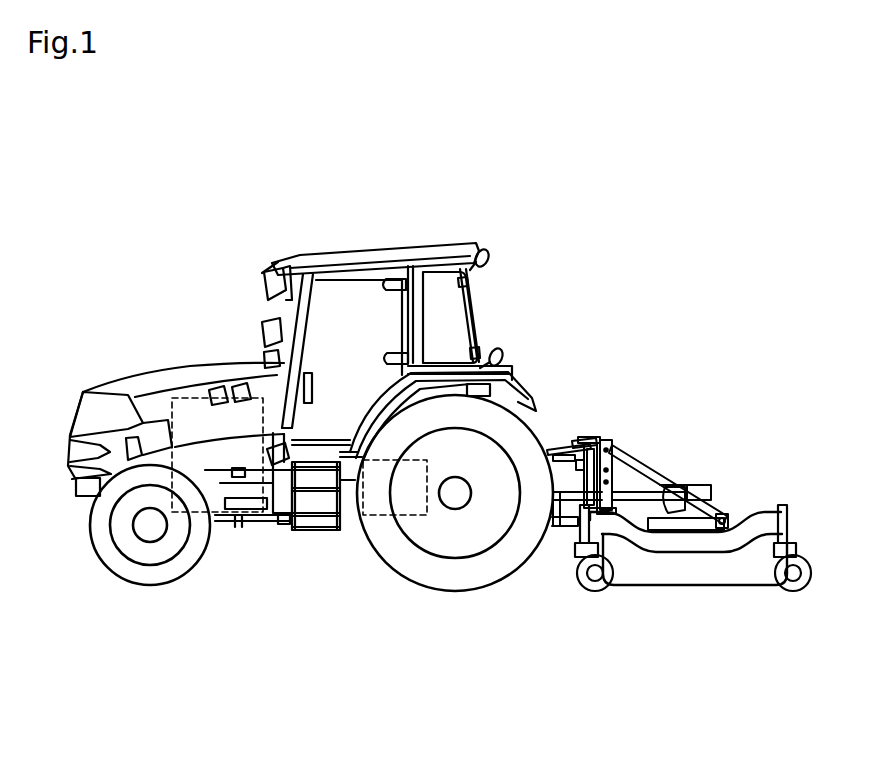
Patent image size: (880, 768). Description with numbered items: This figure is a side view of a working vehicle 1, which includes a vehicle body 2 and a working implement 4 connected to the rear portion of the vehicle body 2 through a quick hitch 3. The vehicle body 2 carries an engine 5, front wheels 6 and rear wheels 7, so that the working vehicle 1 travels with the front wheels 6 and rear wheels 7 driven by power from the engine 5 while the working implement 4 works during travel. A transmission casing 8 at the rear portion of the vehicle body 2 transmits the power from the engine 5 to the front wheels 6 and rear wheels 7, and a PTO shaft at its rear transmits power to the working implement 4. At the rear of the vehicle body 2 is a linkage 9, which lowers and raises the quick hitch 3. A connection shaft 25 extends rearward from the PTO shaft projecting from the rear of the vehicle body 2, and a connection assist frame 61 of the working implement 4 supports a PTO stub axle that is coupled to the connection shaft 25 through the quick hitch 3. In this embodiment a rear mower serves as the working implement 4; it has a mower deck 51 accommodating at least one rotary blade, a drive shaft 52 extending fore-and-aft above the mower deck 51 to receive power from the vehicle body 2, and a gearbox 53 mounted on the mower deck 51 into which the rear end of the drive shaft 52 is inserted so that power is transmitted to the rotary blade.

The working vehicle 1 is at (633, 236).
The vehicle body 2 is at (397, 217).
The quick hitch 3 is at (590, 440).
The working implement 4 is at (709, 462).
The engine 5 is at (207, 517).
The front wheels 6 is at (115, 575).
The rear wheels 7 is at (468, 592).
The transmission casing 8 is at (385, 522).
The linkage 9 is at (551, 441).
The connection shaft 25 is at (568, 502).
The mower deck 51 is at (733, 585).
The drive shaft 52 is at (663, 486).
The gearbox 53 is at (714, 496).
The connection assist frame 61 is at (612, 440).